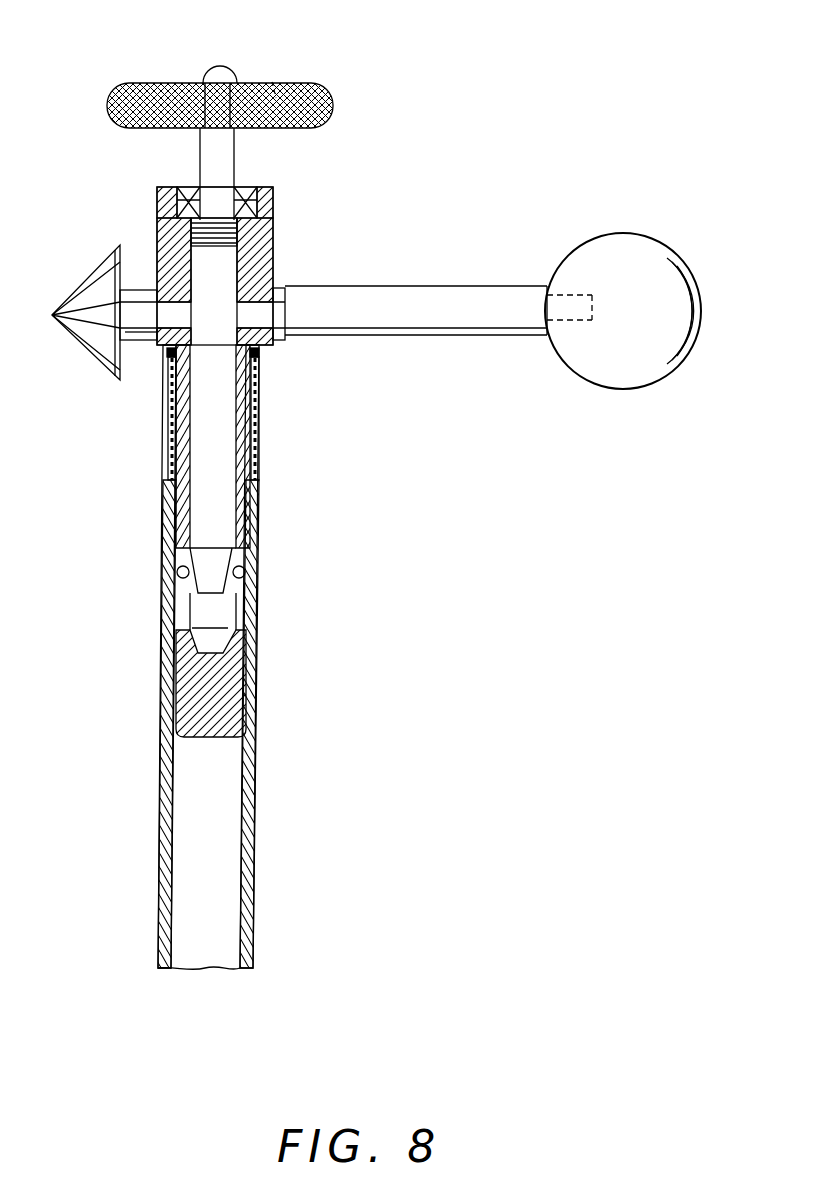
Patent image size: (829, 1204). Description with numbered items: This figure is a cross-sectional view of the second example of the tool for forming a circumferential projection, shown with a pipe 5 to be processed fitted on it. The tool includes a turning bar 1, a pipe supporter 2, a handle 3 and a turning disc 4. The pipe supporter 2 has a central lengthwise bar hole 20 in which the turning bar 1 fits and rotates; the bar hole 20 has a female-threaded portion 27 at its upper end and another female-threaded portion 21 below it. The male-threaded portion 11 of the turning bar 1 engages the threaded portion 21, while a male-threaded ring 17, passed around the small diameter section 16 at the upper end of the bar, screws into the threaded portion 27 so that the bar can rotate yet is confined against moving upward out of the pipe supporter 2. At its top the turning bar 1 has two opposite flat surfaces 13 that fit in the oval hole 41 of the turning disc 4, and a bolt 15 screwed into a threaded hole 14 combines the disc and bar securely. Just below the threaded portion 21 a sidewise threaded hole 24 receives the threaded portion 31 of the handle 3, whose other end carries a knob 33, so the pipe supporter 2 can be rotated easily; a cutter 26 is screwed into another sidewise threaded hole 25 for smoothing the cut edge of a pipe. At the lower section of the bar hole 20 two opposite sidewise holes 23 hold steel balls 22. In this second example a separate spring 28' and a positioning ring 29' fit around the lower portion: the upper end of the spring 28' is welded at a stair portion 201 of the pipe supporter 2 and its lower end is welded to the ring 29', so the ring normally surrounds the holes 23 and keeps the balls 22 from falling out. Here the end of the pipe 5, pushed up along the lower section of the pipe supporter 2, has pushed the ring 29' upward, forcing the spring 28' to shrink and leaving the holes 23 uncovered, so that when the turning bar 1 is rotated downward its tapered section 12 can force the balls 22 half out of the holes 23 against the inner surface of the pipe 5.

The turning bar 1 is at (263, 446).
The pipe supporter 2 is at (233, 675).
The handle 3 is at (400, 296).
The turning disc 4 is at (330, 92).
The pipe 5 is at (164, 690).
The threaded portion 11 is at (265, 224).
The tapered section 12 is at (215, 580).
The flat surfaces 13 is at (270, 82).
The threaded hole 14 is at (226, 80).
The bolt 15 is at (286, 50).
The small diameter section 16 is at (226, 160).
The male-threaded ring 17 is at (265, 197).
The bar hole 20 is at (224, 395).
The threaded portion 21 is at (286, 226).
The steel balls 22 is at (209, 558).
The sidewise holes 23 is at (178, 575).
The sidewise threaded hole 24 is at (285, 300).
The sidewise threaded hole 25 is at (163, 305).
The cutter 26 is at (93, 290).
The female-threaded portion 27 is at (279, 198).
The spring 28' is at (238, 427).
The positioning ring 29' is at (238, 431).
The threaded portion 31 is at (327, 289).
The knob 33 is at (606, 250).
The oval hole 41 is at (322, 74).
The stair portion 201 is at (165, 356).